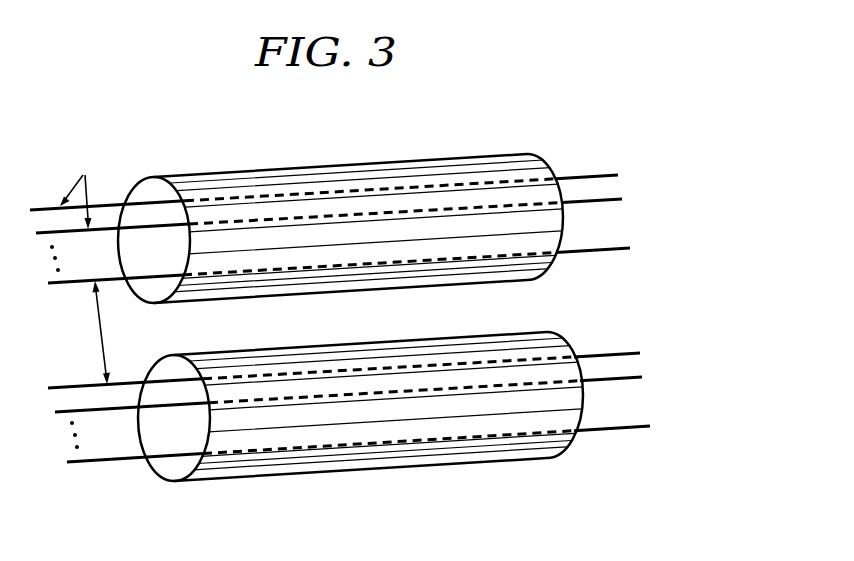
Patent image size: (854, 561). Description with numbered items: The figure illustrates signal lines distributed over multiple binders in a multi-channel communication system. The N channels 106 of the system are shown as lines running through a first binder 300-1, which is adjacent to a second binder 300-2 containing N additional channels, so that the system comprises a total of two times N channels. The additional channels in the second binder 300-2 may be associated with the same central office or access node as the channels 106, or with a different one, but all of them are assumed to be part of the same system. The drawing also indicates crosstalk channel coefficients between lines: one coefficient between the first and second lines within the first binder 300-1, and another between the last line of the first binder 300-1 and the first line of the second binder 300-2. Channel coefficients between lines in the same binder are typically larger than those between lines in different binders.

The channels 106 is at (582, 117).
The first binder 300-1 is at (548, 263).
The second binder 300-2 is at (565, 443).